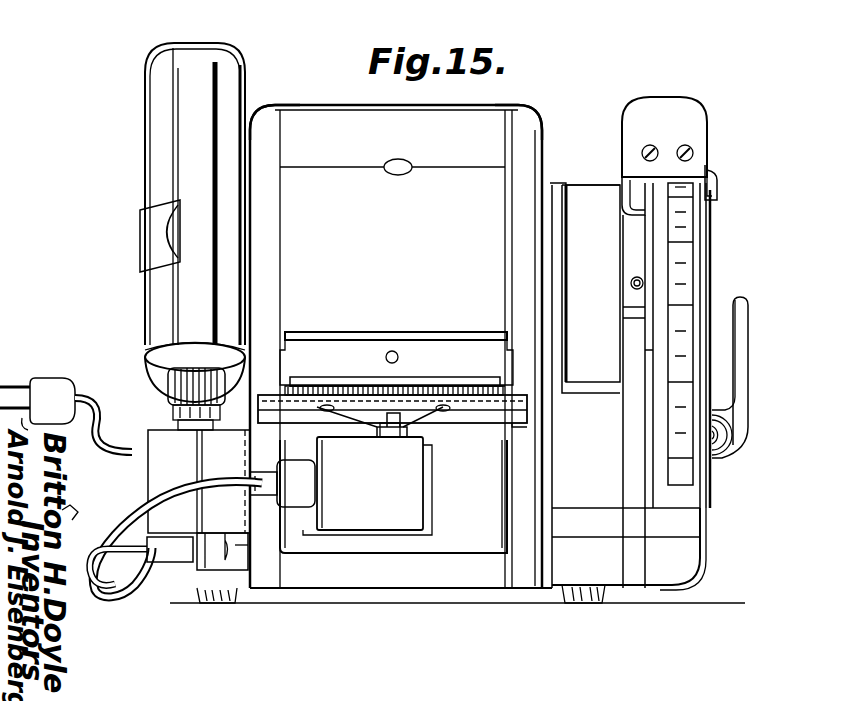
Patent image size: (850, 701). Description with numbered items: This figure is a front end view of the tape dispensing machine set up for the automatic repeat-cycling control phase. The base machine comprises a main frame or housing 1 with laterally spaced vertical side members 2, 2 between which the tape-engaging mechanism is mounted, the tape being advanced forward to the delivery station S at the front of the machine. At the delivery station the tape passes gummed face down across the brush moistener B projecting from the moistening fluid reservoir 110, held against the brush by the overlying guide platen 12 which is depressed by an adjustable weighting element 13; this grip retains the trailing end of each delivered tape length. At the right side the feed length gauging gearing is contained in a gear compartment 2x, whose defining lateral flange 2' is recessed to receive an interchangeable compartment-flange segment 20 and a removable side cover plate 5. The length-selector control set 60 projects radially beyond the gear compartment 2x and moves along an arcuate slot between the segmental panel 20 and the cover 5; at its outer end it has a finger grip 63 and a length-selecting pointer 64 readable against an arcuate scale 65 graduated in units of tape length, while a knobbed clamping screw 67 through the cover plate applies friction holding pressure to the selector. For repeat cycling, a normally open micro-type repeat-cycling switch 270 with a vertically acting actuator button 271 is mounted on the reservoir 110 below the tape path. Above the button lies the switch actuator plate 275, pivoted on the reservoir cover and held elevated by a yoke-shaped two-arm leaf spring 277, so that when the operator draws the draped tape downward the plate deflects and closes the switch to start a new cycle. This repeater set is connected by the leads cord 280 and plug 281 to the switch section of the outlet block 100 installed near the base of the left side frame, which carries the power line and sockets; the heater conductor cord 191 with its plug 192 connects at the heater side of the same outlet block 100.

The main frame or housing 1 is at (338, 103).
The vertical side members 2 is at (398, 106).
The lateral flange 2' is at (625, 370).
The gear compartment 2x is at (575, 183).
The compartment-flange segment 20 is at (594, 195).
The control set or selector 60 is at (708, 106).
The finger grip 63 is at (634, 112).
The length-selecting pointer 64 is at (718, 190).
The arcuate scale 65 is at (683, 270).
The clamping screw 67 is at (752, 314).
The side cover plate 5 is at (693, 499).
The delivery station S is at (452, 358).
The weighting element 13 is at (399, 358).
The guide platen 12 is at (322, 382).
The brush moistener B is at (478, 397).
The switch actuator plate 275 is at (525, 420).
The two-arm leaf spring 277 is at (340, 412).
The actuator plunger or button 271 is at (364, 432).
The repeat-cycling switch 270 is at (400, 450).
The moistening fluid reservoir 110 is at (437, 545).
The heater plug 192 is at (66, 378).
The heater conductor cord 191 is at (105, 413).
The leads cord 280 is at (126, 502).
The plug 281 is at (168, 560).
The outlet block 100 is at (215, 588).